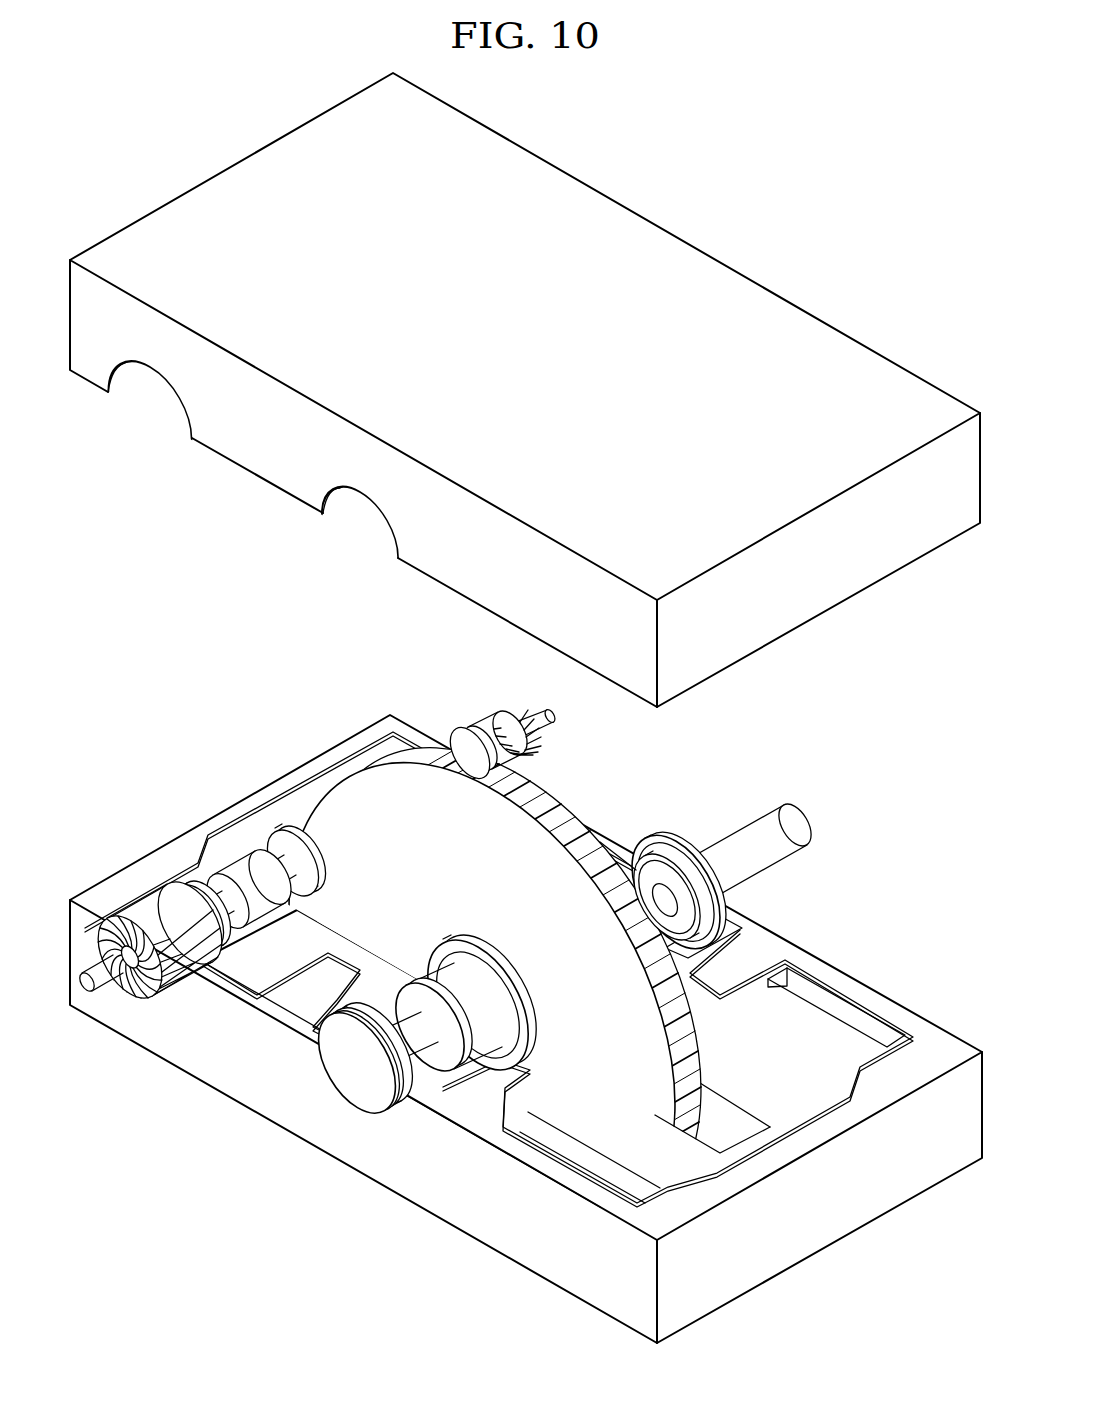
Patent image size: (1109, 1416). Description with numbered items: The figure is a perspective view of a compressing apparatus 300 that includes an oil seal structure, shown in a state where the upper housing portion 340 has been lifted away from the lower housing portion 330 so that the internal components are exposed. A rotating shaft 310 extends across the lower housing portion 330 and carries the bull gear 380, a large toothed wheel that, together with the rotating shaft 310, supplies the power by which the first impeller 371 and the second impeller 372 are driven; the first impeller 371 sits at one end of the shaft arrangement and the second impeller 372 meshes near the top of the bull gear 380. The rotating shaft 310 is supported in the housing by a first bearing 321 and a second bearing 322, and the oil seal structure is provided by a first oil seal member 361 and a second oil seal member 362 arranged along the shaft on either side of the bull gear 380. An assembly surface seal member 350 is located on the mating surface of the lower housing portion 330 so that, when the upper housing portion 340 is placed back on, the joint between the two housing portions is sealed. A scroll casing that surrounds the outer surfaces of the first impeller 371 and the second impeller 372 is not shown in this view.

The compressing apparatus 300 is at (901, 195).
The rotating shaft 310 is at (782, 820).
The first bearing 321 is at (625, 862).
The second bearing 322 is at (440, 1068).
The lower housing portion 330 is at (542, 1253).
The upper housing portion 340 is at (843, 570).
The assembly surface seal member 350 is at (522, 1138).
The first oil seal member 361 is at (672, 845).
The second oil seal member 362 is at (345, 1092).
The first impeller 371 is at (152, 1005).
The second impeller 372 is at (512, 737).
The bull gear 380 is at (555, 808).